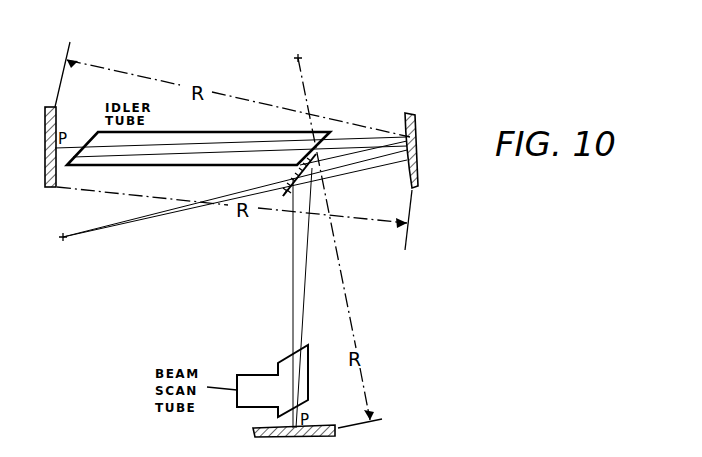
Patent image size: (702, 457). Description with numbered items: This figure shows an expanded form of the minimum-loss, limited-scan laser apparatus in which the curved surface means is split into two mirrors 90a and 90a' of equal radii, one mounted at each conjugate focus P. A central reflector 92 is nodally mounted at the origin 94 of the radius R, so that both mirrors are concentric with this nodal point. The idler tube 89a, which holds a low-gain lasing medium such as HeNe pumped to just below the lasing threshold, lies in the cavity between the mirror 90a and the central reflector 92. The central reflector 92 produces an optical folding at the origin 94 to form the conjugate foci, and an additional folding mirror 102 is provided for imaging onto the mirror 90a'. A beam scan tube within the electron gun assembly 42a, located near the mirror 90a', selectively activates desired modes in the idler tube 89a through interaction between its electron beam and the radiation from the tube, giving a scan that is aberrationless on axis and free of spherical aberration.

The mirror 90a is at (72, 131).
The idler tube 89a is at (244, 131).
The central reflector 92 is at (404, 118).
The origin 94 is at (403, 157).
The folding mirror 102 is at (307, 174).
The electron gun assembly 42a is at (253, 370).
The mirror 90a' is at (307, 408).